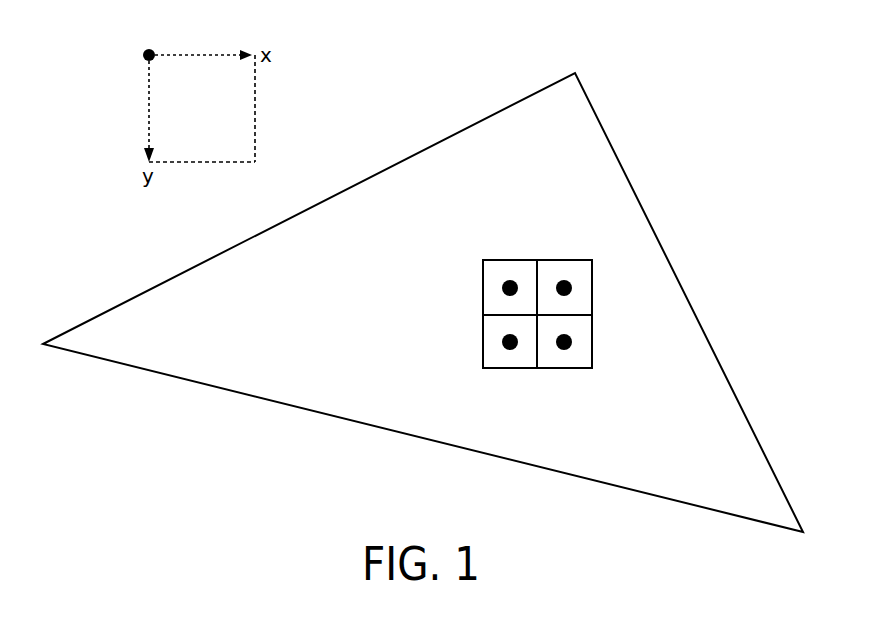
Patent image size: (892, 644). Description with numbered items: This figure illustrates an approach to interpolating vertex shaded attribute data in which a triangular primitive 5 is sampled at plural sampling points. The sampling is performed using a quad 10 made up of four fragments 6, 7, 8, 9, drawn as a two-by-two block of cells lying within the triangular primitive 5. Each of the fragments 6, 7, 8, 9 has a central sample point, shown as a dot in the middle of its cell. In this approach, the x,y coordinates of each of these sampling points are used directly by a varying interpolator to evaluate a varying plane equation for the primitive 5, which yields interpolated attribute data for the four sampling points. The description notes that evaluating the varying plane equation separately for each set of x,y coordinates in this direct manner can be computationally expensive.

The triangular primitive 5 is at (604, 130).
The quad 10 is at (501, 241).
The fragment 6 is at (483, 288).
The fragment 7 is at (592, 288).
The fragment 8 is at (483, 342).
The fragment 9 is at (592, 342).